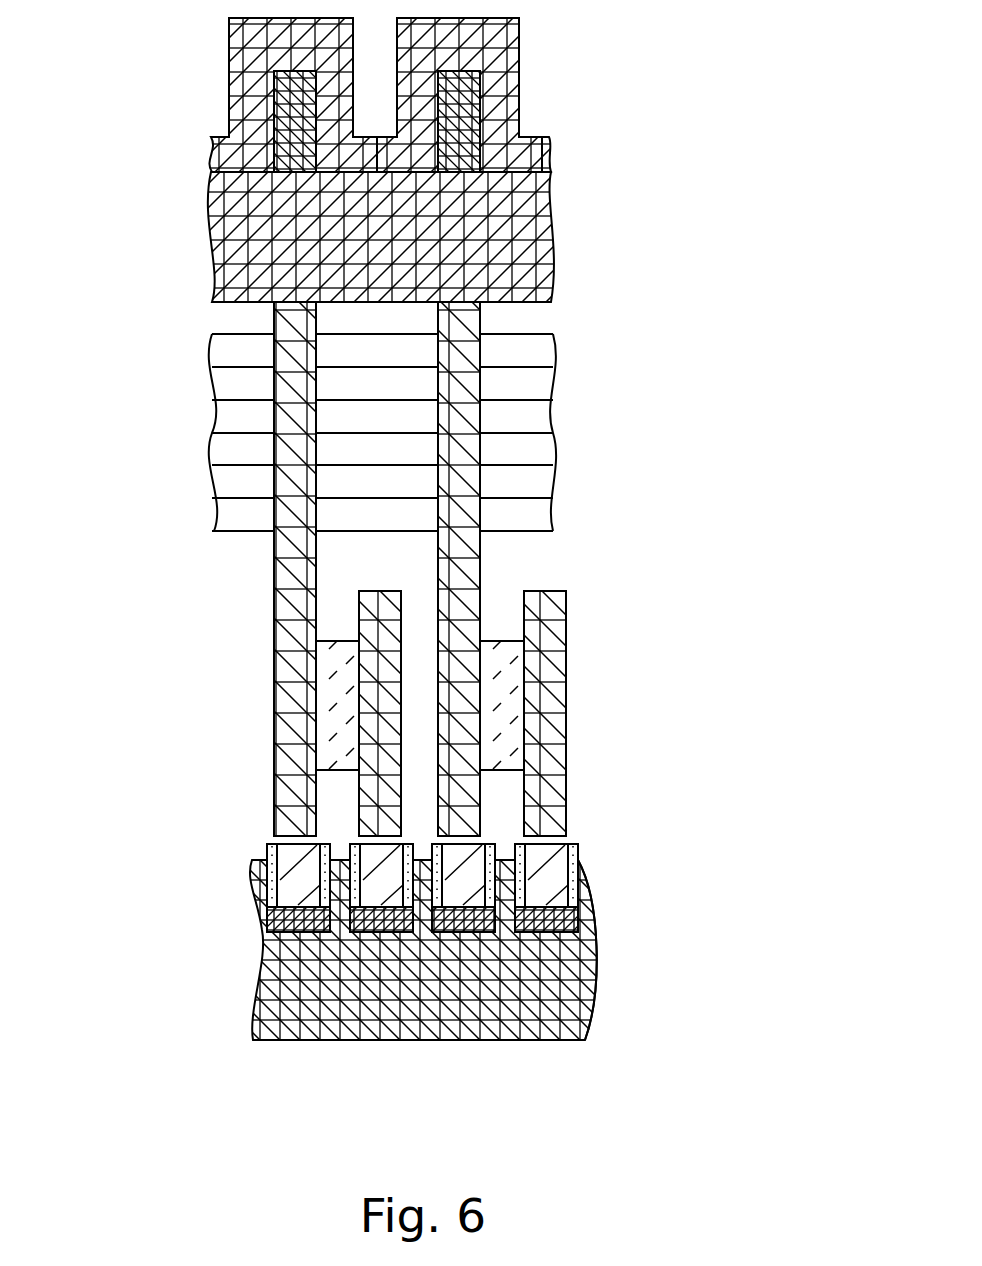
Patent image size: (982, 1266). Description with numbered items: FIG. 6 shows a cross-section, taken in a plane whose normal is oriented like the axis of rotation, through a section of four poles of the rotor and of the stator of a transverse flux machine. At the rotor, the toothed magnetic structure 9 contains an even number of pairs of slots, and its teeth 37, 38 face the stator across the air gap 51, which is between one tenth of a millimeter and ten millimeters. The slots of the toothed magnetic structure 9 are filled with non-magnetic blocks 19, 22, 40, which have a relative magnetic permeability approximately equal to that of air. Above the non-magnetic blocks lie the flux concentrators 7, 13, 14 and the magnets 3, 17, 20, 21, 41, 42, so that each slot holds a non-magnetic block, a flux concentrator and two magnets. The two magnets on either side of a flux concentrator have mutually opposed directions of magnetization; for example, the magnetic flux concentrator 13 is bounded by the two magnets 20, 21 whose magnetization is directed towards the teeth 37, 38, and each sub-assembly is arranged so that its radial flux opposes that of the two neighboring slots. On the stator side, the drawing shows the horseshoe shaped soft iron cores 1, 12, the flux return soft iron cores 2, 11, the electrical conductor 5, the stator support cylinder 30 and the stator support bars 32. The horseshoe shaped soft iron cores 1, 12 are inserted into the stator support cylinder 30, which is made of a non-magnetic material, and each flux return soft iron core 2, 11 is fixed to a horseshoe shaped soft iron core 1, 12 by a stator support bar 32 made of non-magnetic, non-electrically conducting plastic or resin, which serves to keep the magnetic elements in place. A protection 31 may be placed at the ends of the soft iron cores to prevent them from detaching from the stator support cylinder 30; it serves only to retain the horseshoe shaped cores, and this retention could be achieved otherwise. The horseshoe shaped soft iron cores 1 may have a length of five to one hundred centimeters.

The horseshoe shaped soft iron core 1 is at (300, 577).
The flux return soft iron core 2 is at (383, 713).
The magnet 3 is at (267, 953).
The electrical conductor 5 is at (542, 372).
The flux concentrator 7 is at (280, 933).
The toothed magnetic structure 9 is at (258, 873).
The flux return soft iron core 11 is at (548, 715).
The horseshoe shaped soft iron core 12 is at (478, 575).
The magnetic flux concentrator 13 is at (470, 897).
The flux concentrator 14 is at (585, 932).
The magnet 17 is at (395, 905).
The non-magnetic block 19 is at (333, 933).
The magnet 20 is at (445, 895).
The magnet 21 is at (522, 902).
The non-magnetic block 22 is at (478, 925).
The stator support cylinder 30 is at (512, 225).
The protection 31 is at (502, 43).
The stator support bar 32 is at (337, 678).
The tooth 37 is at (497, 886).
The tooth 38 is at (433, 890).
The non-magnetic block 40 is at (597, 1003).
The magnet 41 is at (573, 902).
The magnet 42 is at (557, 905).
The air gap 51 is at (562, 838).